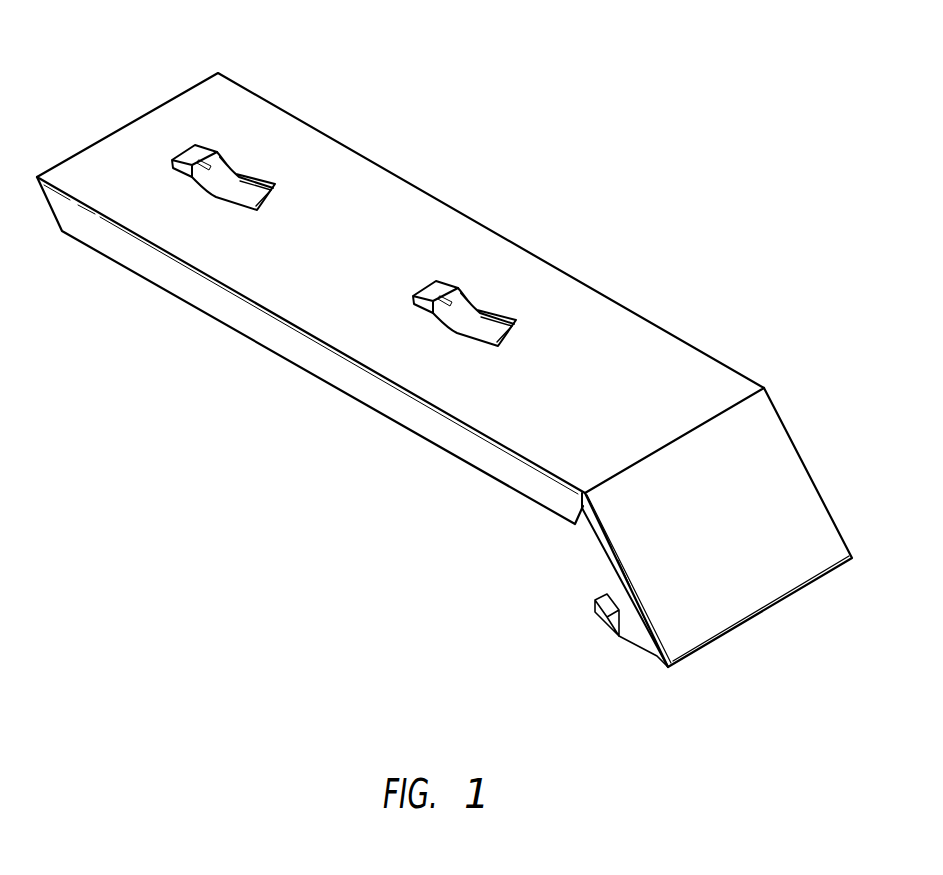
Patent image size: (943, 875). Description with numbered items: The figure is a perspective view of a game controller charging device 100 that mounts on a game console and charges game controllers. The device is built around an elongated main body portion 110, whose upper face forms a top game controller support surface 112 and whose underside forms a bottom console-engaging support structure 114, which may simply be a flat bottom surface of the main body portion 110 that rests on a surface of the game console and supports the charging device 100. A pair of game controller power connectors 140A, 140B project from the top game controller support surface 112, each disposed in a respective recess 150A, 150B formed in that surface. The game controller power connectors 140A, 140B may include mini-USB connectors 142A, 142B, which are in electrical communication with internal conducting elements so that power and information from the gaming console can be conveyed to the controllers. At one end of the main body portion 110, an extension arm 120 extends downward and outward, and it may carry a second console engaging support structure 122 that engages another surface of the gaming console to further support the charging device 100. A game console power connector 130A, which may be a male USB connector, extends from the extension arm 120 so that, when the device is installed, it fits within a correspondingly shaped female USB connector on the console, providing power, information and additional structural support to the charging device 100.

The game controller charging device 100 is at (457, 168).
The main body portion 110 is at (582, 296).
The top game controller support surface 112 is at (109, 159).
The bottom console-engaging support structure 114 is at (401, 427).
The extension arm 120 is at (598, 558).
The second console engaging support structure 122 is at (579, 537).
The game console power connector 130A is at (593, 607).
The game controller power connector 140A is at (198, 150).
The game controller power connector 140B is at (440, 286).
The mini-USB connector 142A is at (224, 163).
The mini-USB connector 142B is at (466, 299).
The recess 150A is at (279, 192).
The recess 150B is at (514, 338).